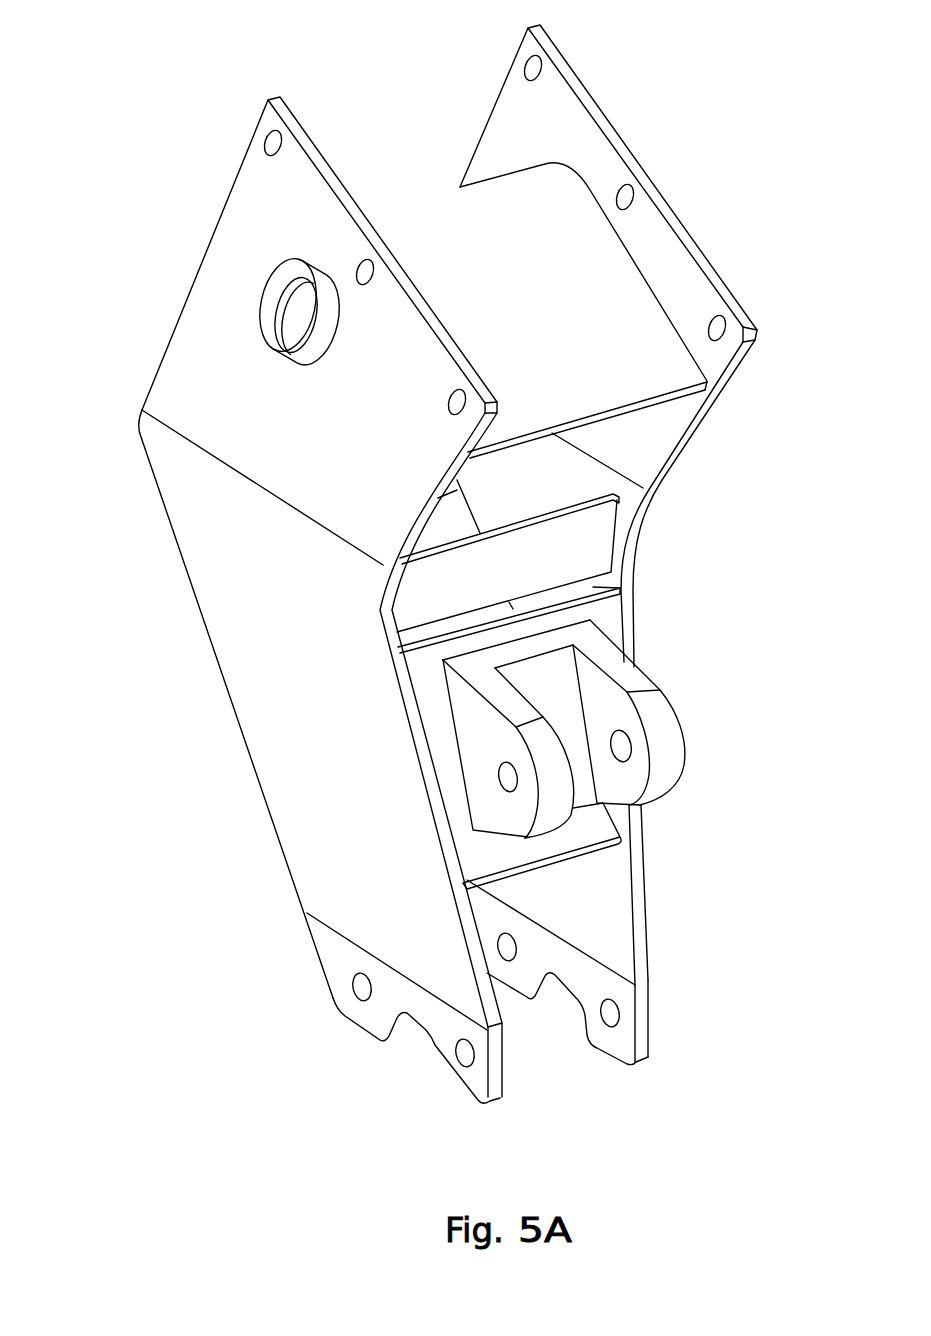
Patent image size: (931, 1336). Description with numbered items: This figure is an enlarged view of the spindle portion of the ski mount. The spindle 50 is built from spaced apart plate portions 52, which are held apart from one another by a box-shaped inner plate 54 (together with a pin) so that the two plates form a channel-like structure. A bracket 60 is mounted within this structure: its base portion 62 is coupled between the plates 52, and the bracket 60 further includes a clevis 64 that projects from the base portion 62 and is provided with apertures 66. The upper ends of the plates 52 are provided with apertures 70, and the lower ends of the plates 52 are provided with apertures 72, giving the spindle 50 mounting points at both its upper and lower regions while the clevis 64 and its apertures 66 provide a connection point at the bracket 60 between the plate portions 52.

The spindle 50 is at (436, 557).
The plate portions 52 is at (670, 263).
The box-shaped inner plate 54 is at (588, 367).
The bracket 60 is at (496, 769).
The base portion 62 is at (608, 613).
The clevis 64 is at (470, 717).
The apertures 66 is at (503, 777).
The apertures 70 is at (266, 136).
The apertures 72 is at (352, 987).